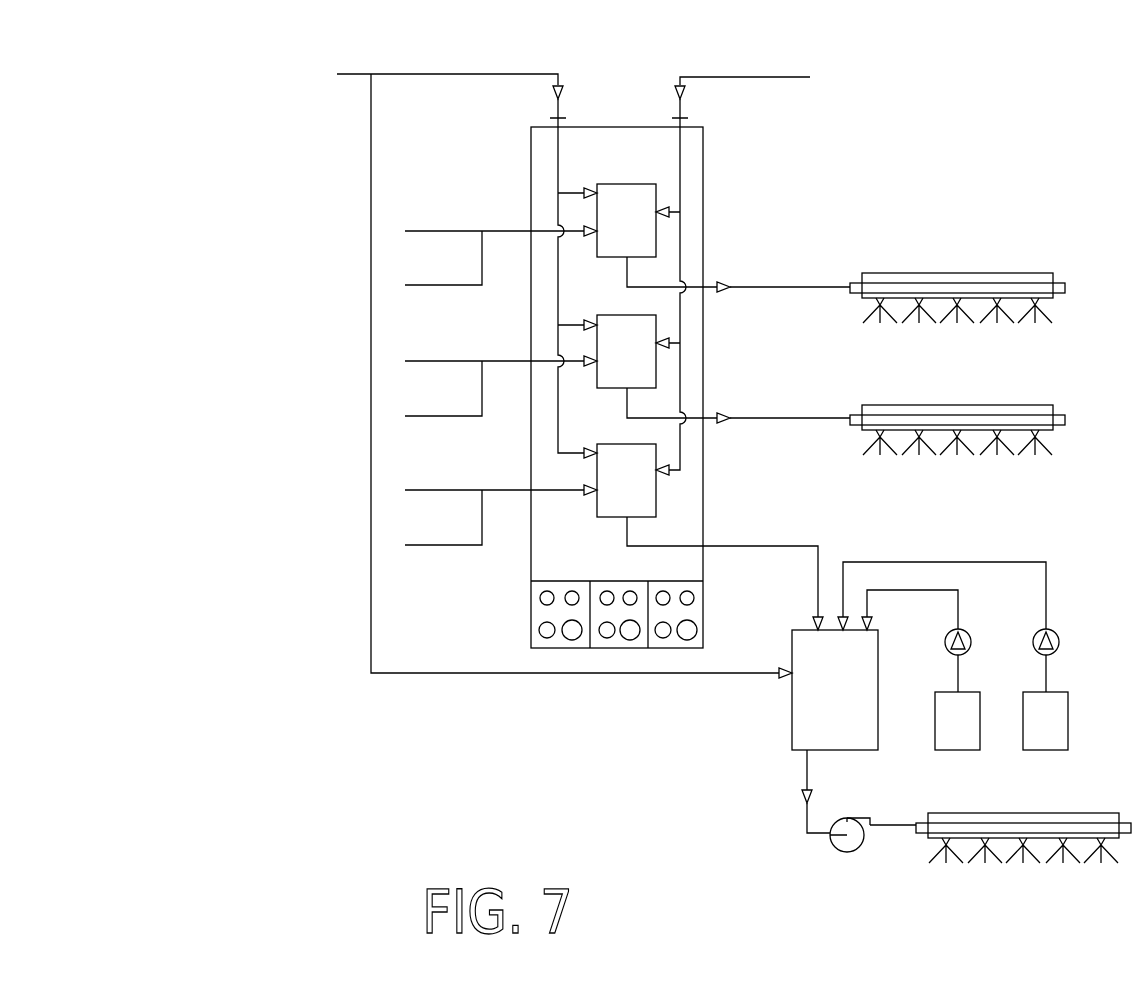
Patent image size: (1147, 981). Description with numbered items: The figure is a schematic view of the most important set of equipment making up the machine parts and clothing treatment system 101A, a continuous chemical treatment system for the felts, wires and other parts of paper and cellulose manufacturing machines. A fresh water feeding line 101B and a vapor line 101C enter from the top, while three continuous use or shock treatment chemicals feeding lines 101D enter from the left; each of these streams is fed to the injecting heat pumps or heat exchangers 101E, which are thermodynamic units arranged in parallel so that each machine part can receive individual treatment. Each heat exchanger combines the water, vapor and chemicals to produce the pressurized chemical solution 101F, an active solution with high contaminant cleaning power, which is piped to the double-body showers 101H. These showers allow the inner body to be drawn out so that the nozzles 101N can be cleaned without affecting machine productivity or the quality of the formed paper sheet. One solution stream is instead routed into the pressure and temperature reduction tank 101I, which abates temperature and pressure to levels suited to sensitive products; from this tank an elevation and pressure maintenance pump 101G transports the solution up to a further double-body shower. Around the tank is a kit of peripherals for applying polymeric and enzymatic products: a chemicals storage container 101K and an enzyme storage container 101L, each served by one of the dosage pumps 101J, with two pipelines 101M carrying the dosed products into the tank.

The machine parts and clothing treatment system 101A is at (327, 47).
The fresh water feeding line 101B is at (470, 74).
The vapor line 101C is at (712, 77).
The chemicals feeding line 101D is at (437, 230).
The injecting heat pumps or heat exchangers 101E is at (623, 183).
The pressurized chemical solution 101F is at (795, 287).
The elevation and pressure maintenance pump 101G is at (840, 818).
The double-body showers 101H is at (990, 273).
The pressure and temperature reduction tank 101I is at (800, 647).
The dosage pumps 101J is at (965, 632).
The chemicals storage container 101K is at (955, 712).
The enzyme storage container 101L is at (1045, 712).
The pipelines 101M is at (1025, 558).
The nozzles 101N is at (1043, 305).